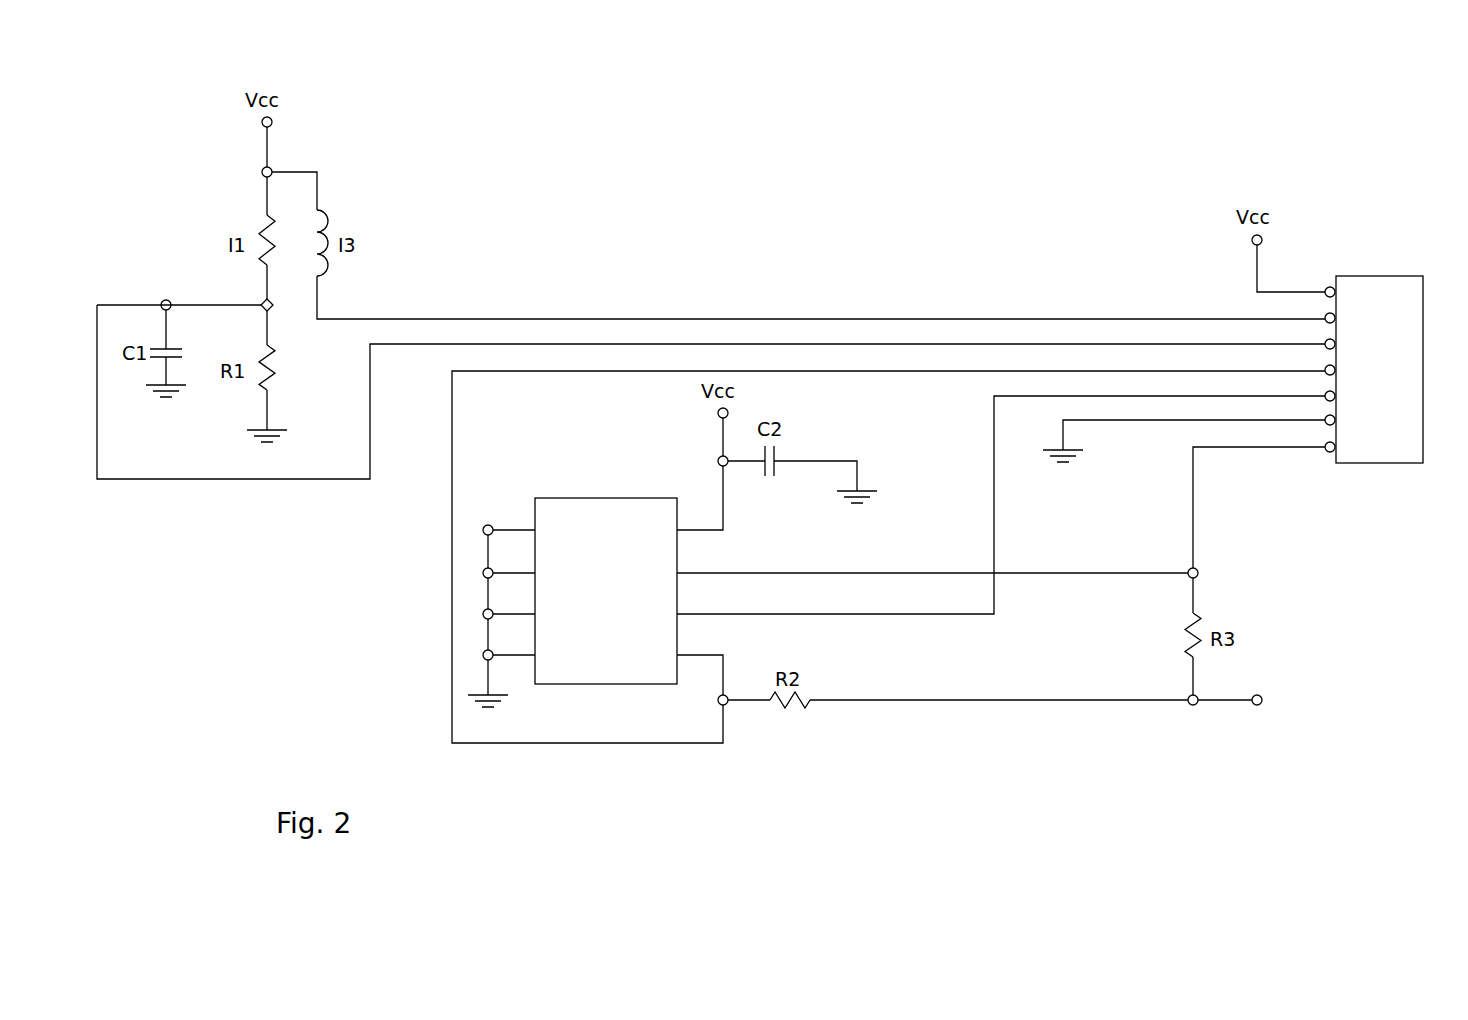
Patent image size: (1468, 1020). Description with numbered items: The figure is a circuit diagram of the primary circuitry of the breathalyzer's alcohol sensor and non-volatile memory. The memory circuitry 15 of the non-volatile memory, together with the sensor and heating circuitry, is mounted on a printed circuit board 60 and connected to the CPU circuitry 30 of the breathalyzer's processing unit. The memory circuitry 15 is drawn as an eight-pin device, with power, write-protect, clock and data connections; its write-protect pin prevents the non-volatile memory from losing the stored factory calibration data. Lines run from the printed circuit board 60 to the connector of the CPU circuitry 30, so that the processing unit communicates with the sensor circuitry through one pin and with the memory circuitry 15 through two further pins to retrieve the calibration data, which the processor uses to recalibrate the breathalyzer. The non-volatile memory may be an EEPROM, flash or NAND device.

The memory circuitry 15 is at (570, 510).
The CPU circuitry 30 is at (1386, 292).
The printed circuit board 60 is at (888, 472).